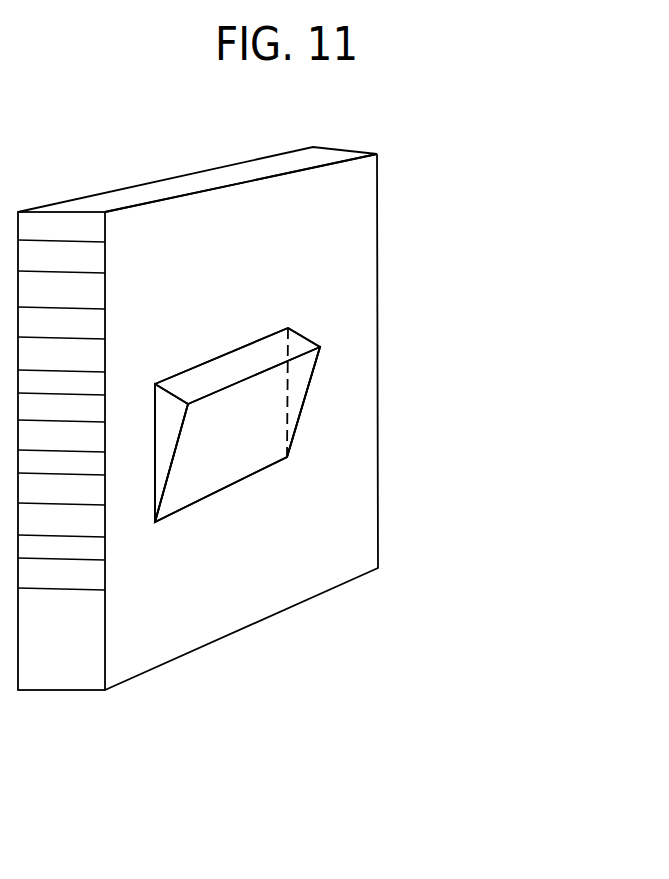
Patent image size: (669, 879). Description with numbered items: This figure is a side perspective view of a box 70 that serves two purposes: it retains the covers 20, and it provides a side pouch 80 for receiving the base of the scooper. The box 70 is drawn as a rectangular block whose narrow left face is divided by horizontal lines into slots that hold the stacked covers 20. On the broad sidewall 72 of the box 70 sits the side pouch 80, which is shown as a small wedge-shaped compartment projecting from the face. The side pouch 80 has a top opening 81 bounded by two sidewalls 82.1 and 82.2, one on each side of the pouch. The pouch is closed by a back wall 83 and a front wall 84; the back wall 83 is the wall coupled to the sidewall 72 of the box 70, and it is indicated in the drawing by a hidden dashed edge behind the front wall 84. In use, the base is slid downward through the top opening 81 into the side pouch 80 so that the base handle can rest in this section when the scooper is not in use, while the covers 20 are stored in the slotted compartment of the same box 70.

The cover 20 is at (63, 265).
The box 70 is at (386, 192).
The sidewall 72 is at (293, 262).
The side pouch 80 is at (249, 342).
The top opening 81 is at (205, 362).
The sidewall 82.1 is at (307, 338).
The sidewall 82.2 is at (165, 425).
The back wall 83 is at (275, 343).
The front wall 84 is at (255, 427).